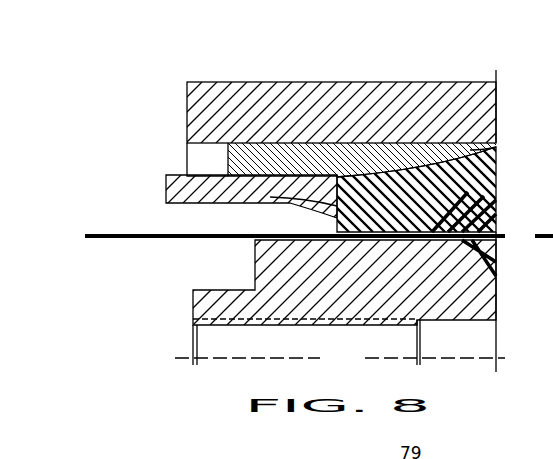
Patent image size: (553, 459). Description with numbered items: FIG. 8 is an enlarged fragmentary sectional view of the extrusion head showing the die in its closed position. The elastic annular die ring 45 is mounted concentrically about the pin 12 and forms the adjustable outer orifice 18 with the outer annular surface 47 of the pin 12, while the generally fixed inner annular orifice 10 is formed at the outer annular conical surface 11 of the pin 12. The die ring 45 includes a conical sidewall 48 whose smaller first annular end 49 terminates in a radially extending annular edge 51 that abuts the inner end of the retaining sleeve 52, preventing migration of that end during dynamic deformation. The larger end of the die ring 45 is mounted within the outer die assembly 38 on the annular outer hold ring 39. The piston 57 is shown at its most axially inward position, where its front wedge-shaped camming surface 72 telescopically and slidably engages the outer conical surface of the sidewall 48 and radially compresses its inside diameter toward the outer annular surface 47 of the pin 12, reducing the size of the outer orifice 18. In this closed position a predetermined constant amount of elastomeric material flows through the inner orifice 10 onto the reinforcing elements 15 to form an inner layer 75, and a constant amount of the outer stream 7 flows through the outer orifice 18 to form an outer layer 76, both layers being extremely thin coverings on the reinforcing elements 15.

The outer stream 7 is at (500, 188).
The inner annular orifice 10 is at (497, 263).
The outer annular conical surface 11 is at (467, 243).
The pin 12 is at (258, 268).
The reinforcing elements 15 is at (110, 240).
The adjustable outer orifice 18 is at (333, 223).
The outer die assembly 38 is at (398, 134).
The outer hold ring 39 is at (260, 118).
The elastic annular die ring 45 is at (505, 143).
The outer annular surface 47 is at (295, 240).
The conical sidewall 48 is at (497, 157).
The first annular end 49 is at (363, 153).
The annular edge 51 is at (275, 193).
The retaining sleeve 52 is at (178, 190).
The piston 57 is at (206, 140).
The wedge-shaped camming surface 72 is at (455, 163).
The inner layer 75 is at (148, 240).
The outer layer 76 is at (102, 226).